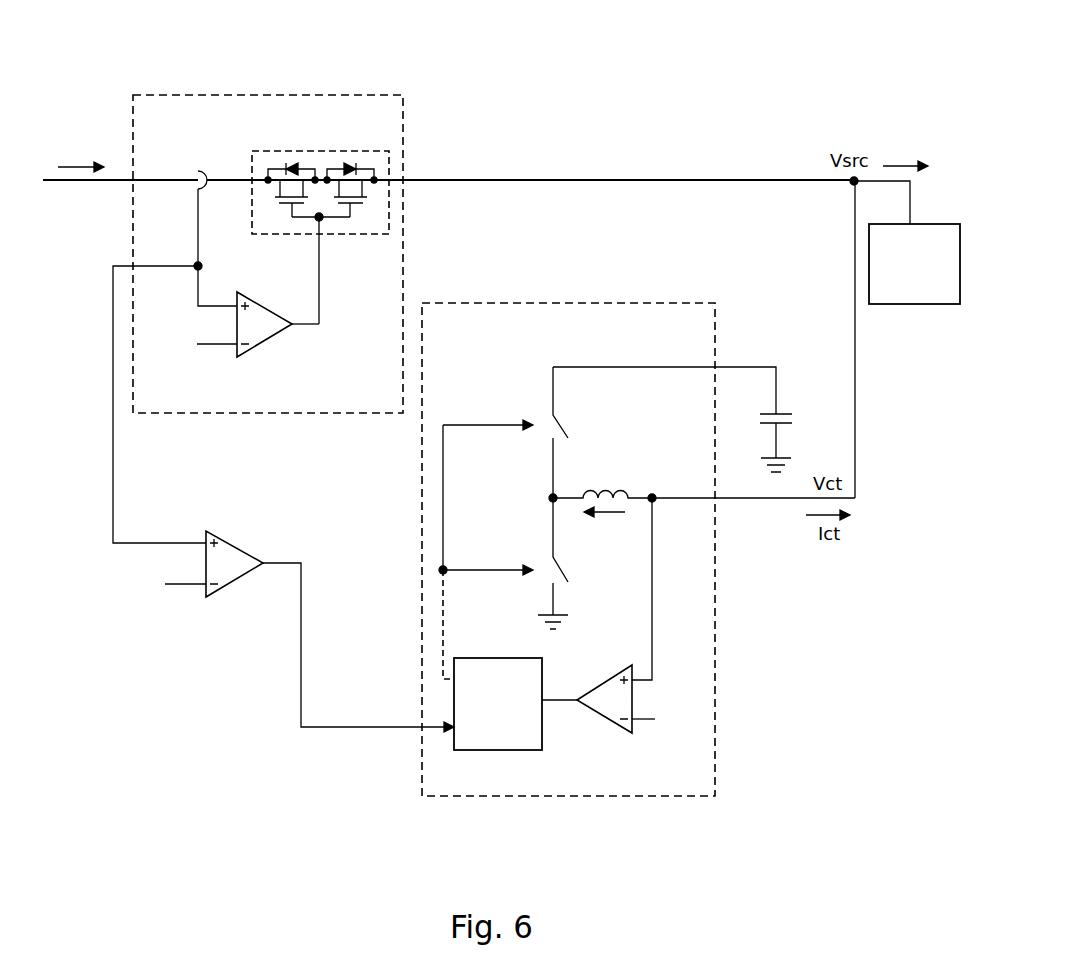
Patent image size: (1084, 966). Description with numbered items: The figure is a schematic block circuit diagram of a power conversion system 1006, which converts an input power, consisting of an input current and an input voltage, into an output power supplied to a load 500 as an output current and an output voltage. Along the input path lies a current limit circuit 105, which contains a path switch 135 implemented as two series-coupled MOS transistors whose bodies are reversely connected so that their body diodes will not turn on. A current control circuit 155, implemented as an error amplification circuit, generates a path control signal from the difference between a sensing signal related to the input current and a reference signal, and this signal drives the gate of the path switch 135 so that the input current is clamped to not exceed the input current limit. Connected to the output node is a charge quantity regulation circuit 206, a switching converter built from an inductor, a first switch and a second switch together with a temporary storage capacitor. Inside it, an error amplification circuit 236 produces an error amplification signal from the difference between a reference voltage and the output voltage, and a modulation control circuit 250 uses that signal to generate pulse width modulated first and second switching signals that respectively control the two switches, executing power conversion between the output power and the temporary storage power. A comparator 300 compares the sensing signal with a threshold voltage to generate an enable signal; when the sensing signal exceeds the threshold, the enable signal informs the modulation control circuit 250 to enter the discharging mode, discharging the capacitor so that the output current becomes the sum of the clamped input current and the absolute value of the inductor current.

The power conversion system 1006 is at (834, 50).
The current limit circuit 105 is at (405, 140).
The path switch 135 is at (327, 150).
The current control circuit 155 is at (250, 350).
The comparator 300 is at (224, 537).
The charge quantity regulation circuit 206 is at (655, 303).
The modulation control circuit 250 is at (515, 704).
The error amplification circuit 236 is at (618, 733).
The load 500 is at (907, 220).